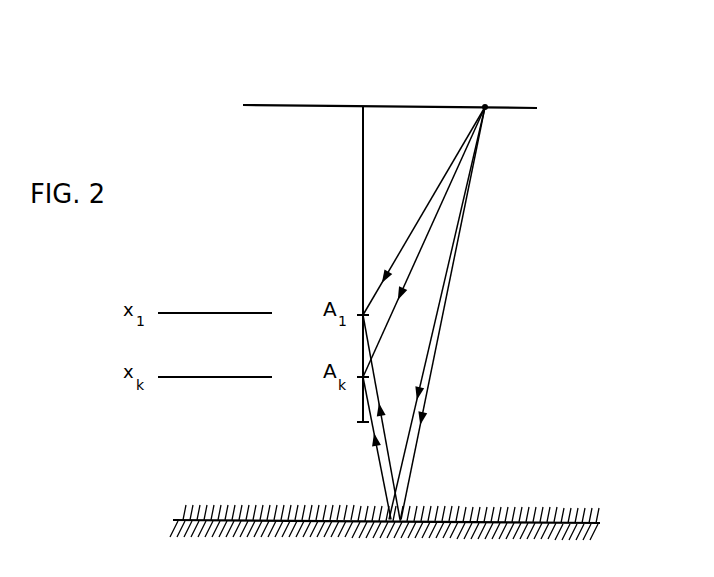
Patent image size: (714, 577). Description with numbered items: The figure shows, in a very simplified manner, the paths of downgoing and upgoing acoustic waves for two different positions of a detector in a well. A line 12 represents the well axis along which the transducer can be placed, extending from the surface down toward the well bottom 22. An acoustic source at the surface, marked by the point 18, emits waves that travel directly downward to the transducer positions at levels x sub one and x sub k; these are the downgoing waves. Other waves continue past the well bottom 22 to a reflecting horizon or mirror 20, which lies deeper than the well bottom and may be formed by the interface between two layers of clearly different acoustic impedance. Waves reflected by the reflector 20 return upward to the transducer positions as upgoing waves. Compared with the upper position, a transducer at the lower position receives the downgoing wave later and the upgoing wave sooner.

The sensor array axis / linear detector 12 is at (360, 173).
The light source point 18 is at (486, 104).
The reflecting horizon 20 is at (540, 517).
The well bottom 22 is at (362, 424).